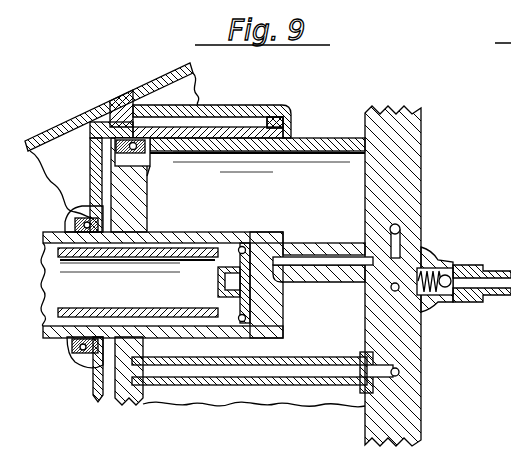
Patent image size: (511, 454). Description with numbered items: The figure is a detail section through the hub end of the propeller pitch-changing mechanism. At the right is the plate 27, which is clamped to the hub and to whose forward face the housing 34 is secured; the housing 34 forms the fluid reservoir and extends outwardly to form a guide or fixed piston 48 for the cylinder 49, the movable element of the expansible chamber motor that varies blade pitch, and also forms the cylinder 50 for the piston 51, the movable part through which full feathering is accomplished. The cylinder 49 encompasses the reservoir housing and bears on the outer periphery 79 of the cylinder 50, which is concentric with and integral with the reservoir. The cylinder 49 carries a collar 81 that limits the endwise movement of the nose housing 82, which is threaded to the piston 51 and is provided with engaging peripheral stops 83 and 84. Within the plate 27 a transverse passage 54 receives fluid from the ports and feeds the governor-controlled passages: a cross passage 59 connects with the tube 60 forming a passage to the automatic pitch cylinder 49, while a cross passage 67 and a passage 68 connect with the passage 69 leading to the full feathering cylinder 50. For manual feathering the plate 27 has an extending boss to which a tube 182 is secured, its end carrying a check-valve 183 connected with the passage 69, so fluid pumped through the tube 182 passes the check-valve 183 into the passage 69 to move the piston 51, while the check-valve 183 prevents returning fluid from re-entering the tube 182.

The plate 27 is at (418, 413).
The housing 34 is at (242, 138).
The fixed piston 48 is at (284, 143).
The cylinder 49 is at (98, 168).
The cylinder 50 is at (202, 240).
The piston 51 is at (84, 258).
The transverse passage 54 is at (398, 291).
The cross passage 59 is at (404, 368).
The tube 60 is at (243, 390).
The cross passage 67 is at (398, 228).
The passage 68 is at (400, 241).
The passage 69 is at (312, 262).
The outer periphery 79 is at (47, 336).
The collar 81 is at (116, 118).
The nose housing 82 is at (55, 133).
The peripheral stop 83 is at (108, 125).
The peripheral stop 84 is at (285, 122).
The tube 182 is at (500, 269).
The check-valve 183 is at (446, 273).